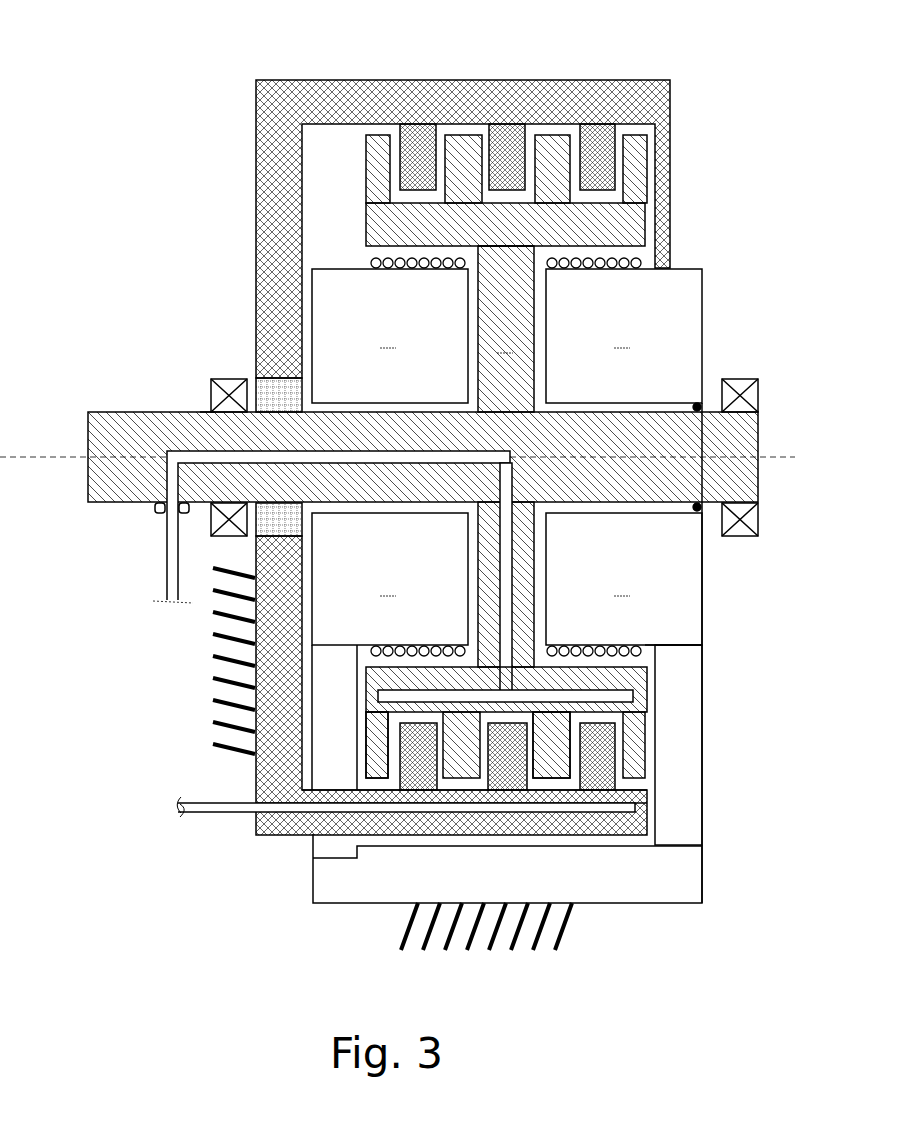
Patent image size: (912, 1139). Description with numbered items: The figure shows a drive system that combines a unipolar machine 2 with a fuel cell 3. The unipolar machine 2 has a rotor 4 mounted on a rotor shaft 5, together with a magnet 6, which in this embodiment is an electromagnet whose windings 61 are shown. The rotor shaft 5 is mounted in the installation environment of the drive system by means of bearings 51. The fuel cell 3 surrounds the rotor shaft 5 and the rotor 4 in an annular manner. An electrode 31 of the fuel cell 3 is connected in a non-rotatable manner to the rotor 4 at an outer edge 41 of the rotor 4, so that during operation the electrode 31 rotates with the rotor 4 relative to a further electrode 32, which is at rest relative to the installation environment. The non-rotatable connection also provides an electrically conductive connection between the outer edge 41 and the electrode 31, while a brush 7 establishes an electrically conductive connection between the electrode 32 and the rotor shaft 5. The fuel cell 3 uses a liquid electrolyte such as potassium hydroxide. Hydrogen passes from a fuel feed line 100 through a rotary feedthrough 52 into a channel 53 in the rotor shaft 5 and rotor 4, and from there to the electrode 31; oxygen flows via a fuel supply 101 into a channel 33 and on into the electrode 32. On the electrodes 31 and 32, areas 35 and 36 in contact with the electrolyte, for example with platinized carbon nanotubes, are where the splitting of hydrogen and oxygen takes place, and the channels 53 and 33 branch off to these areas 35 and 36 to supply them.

The unipolar machine 2 is at (158, 686).
The fuel cell 3 is at (700, 160).
The rotor 4 is at (506, 469).
The rotor shaft 5 is at (115, 412).
The magnet 6 is at (507, 457).
The brush 7 is at (283, 385).
The electrode 31 is at (365, 210).
The further electrode 32 is at (608, 110).
The channel 33 is at (652, 805).
The area 35 is at (390, 780).
The area 36 is at (535, 780).
The outer edge 41 is at (495, 232).
The bearings 51 is at (225, 380).
The rotary feedthrough 52 is at (157, 510).
The channel 53 is at (205, 445).
The windings 61 is at (370, 265).
The fuel feed line 100 is at (167, 558).
The fuel supply 101 is at (218, 815).